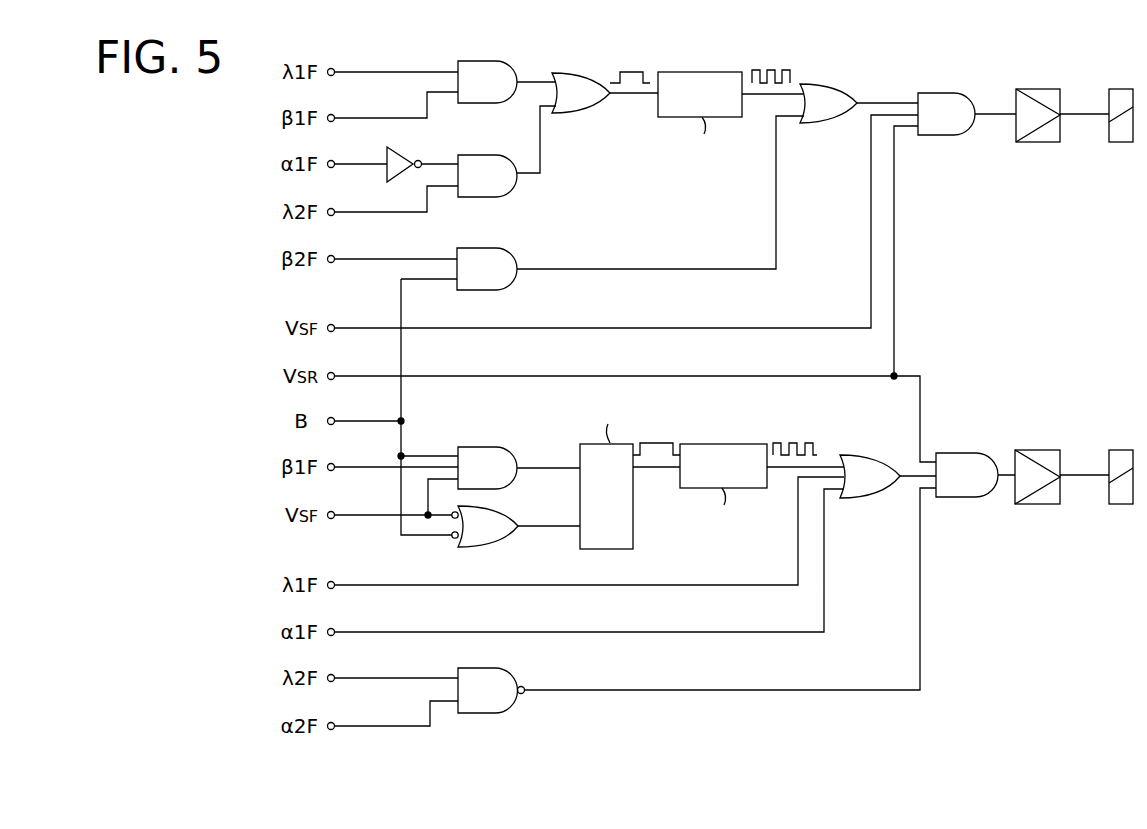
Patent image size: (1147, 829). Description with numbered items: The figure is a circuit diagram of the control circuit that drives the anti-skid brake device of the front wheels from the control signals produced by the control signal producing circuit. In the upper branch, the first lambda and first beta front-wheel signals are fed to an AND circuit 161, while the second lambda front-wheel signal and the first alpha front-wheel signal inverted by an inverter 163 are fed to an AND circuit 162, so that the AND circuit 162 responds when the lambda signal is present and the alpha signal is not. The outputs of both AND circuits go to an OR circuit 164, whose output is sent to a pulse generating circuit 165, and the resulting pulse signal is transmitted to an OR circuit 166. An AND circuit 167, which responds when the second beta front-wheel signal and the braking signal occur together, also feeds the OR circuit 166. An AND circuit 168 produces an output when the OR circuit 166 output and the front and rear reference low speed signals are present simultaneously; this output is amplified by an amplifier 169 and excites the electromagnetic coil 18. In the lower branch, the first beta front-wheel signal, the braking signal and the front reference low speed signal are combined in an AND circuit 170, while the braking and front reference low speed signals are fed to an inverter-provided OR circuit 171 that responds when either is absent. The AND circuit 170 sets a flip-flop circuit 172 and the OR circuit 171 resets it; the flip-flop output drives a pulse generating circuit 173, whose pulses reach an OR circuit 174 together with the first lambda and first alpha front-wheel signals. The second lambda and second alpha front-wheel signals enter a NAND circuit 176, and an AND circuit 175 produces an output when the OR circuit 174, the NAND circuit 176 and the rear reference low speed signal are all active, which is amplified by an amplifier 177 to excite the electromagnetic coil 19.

The AND circuit 161 is at (470, 94).
The AND circuit 162 is at (470, 188).
The inverter 163 is at (410, 153).
The OR circuit 164 is at (594, 104).
The pulse generating circuit 165 is at (716, 105).
The OR circuit 166 is at (844, 115).
The AND circuit 167 is at (470, 281).
The AND circuit 168 is at (928, 126).
The amplifier 169 is at (1034, 88).
The electromagnetic coil 18 is at (1118, 88).
The AND circuit 170 is at (470, 480).
The inverter-provided OR circuit 171 is at (470, 537).
The flip-flop circuit 172 is at (622, 514).
The pulse generating circuit 173 is at (739, 474).
The OR circuit 174 is at (883, 488).
The AND circuit 175 is at (978, 487).
The NAND circuit 176 is at (470, 702).
The amplifier 177 is at (1033, 448).
The electromagnetic coil 19 is at (1118, 448).